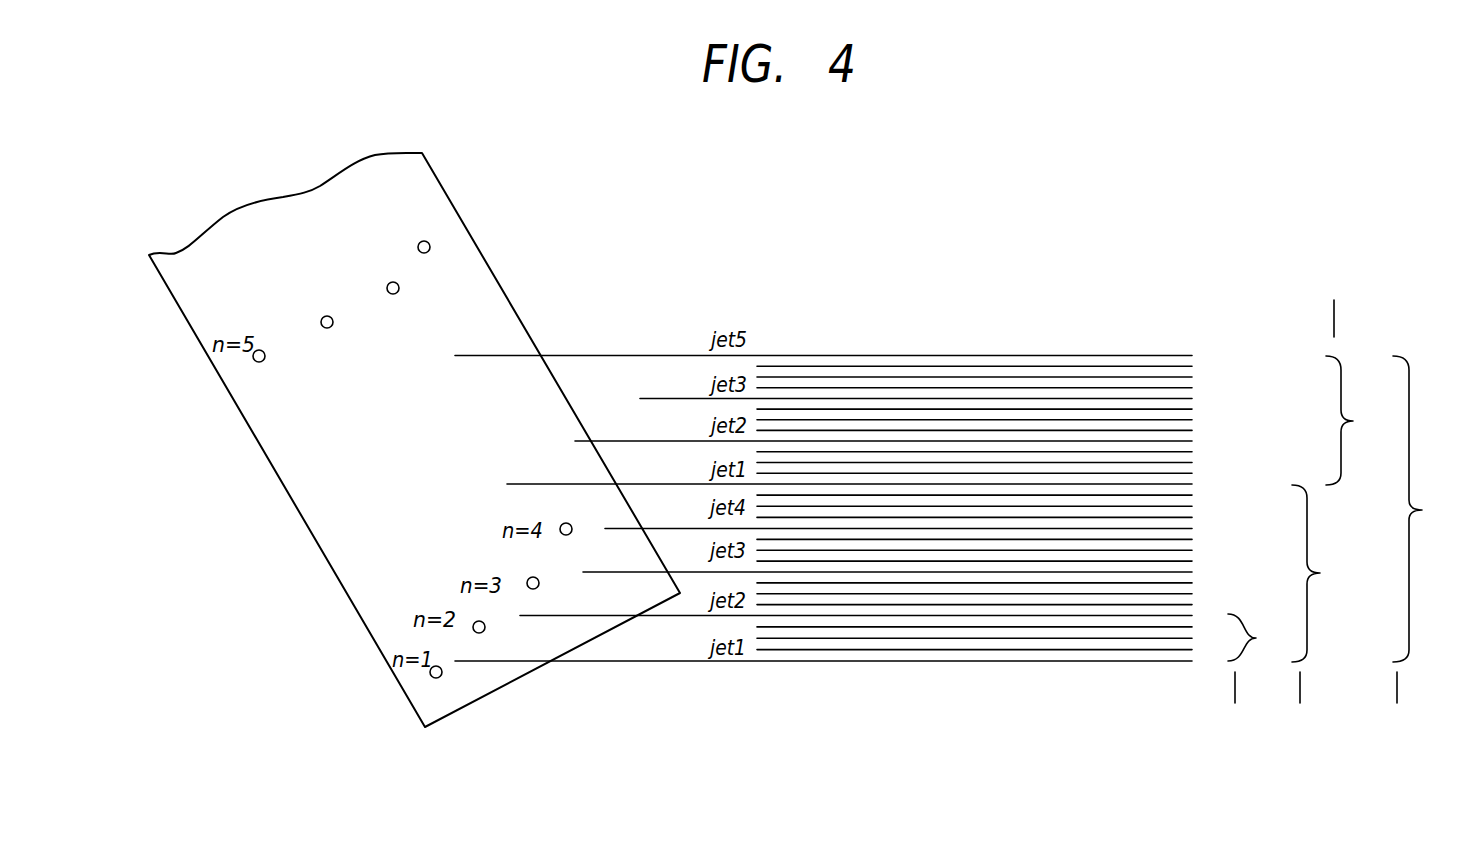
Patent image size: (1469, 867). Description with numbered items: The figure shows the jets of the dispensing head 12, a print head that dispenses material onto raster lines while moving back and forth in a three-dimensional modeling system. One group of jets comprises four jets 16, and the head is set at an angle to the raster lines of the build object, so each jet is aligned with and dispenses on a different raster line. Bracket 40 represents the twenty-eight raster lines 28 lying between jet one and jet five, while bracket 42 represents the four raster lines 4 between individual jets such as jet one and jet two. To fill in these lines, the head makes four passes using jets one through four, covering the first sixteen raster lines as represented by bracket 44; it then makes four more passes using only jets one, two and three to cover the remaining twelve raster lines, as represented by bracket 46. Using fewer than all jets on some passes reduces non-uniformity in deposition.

The pixel row spacing 4 is at (1256, 638).
The dispensing head 12 is at (1353, 421).
The jets 16 is at (1320, 573).
The printed scan lines 28 is at (1422, 510).
The bracket 40 is at (1397, 703).
The bracket 42 is at (1235, 703).
The bracket 44 is at (1300, 703).
The bracket 46 is at (1334, 300).